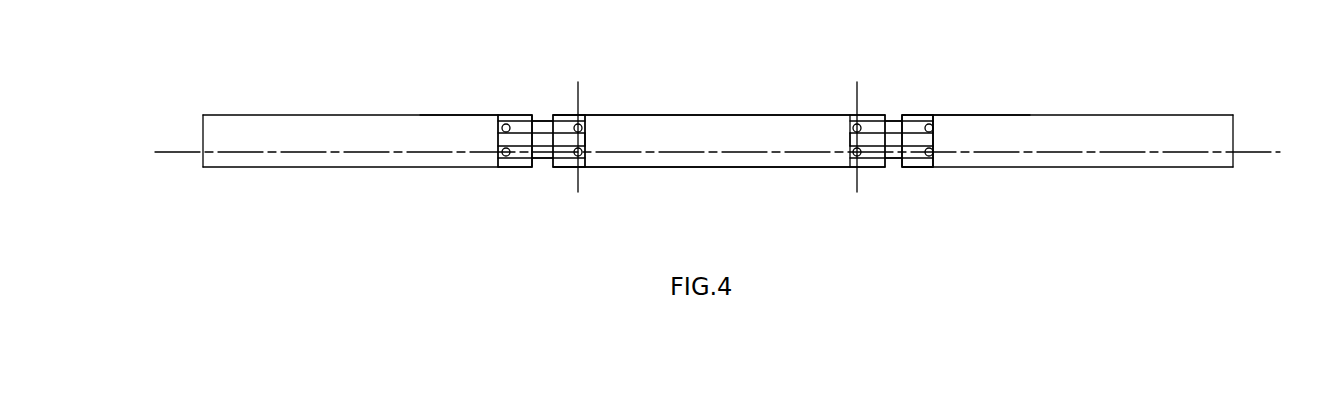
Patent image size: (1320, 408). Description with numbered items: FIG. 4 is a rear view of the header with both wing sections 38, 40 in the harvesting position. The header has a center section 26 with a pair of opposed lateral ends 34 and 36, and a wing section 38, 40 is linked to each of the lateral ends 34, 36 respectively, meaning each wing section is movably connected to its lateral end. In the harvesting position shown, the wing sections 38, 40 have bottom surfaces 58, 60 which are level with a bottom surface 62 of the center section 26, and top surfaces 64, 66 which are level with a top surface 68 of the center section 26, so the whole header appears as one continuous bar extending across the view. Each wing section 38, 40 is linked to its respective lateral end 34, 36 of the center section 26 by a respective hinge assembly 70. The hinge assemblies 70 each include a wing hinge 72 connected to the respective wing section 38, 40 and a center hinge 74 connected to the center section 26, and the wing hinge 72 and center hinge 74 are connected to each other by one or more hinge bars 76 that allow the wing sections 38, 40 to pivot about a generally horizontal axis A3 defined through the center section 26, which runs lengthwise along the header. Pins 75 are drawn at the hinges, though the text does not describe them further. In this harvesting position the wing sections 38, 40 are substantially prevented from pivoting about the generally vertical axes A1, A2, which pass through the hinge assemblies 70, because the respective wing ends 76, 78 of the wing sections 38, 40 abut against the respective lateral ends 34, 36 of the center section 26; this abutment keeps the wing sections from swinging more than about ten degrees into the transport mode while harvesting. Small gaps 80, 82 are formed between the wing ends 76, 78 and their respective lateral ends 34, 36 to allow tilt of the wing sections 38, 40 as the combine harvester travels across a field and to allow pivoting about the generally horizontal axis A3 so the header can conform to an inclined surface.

The center section 26 is at (782, 115).
The lateral end 34 is at (548, 115).
The lateral end 36 is at (886, 115).
The wing section 38 is at (408, 115).
The wing section 40 is at (1073, 127).
The bottom surface 58 is at (393, 167).
The bottom surface 60 is at (1018, 167).
The bottom surface 62 is at (718, 167).
The top surface 64 is at (447, 115).
The top surface 66 is at (1025, 115).
The top surface 68 is at (720, 115).
The hinge assembly 70 is at (556, 115).
The wing hinge 72 is at (498, 167).
The center hinge 74 is at (586, 143).
The pin 75 is at (581, 125).
The wing end 76 is at (535, 167).
The wing end 78 is at (898, 167).
The gap 80 is at (533, 115).
The gap 82 is at (884, 167).
The generally vertical axis A1 is at (586, 115).
The generally vertical axis A2 is at (857, 115).
The generally horizontal axis A3 is at (637, 167).